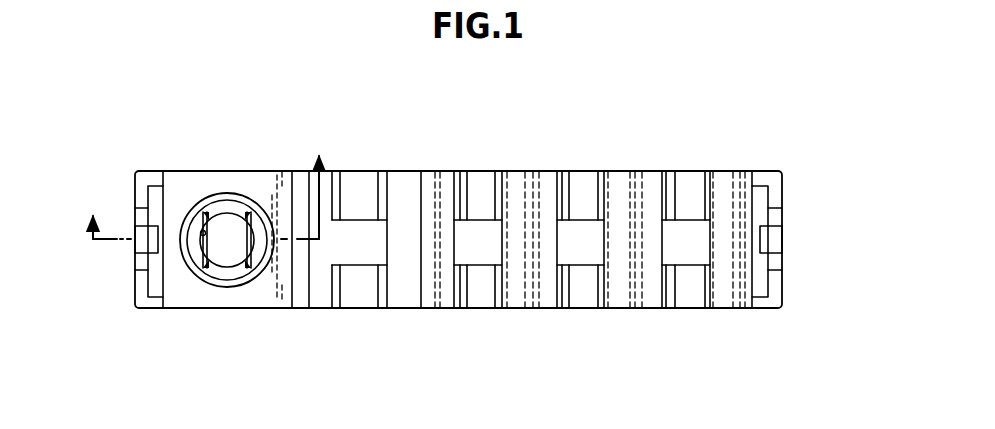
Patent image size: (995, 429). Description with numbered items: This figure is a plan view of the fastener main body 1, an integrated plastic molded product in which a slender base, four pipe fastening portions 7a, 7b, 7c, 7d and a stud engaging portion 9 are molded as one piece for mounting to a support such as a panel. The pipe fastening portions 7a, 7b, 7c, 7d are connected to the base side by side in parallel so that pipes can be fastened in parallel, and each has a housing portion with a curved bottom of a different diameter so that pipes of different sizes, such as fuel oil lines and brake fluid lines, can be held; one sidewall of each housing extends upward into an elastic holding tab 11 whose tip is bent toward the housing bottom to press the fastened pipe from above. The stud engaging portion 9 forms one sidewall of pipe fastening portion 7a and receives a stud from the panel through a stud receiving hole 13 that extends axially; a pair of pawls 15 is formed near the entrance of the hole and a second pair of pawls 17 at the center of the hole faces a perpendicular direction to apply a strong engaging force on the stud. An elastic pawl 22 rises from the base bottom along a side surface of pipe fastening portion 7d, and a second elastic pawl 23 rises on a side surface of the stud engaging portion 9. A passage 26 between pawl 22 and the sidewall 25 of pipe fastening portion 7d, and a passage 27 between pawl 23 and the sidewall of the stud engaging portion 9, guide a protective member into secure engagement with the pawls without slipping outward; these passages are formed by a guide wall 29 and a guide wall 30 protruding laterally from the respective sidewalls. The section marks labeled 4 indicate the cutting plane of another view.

The fastener main body 1 is at (802, 117).
The stud engaging portion 9 is at (210, 185).
The pipe fastening portion 7a is at (361, 162).
The pipe fastening portion 7b is at (484, 162).
The pipe fastening portion 7c is at (589, 162).
The pipe fastening portion 7d is at (692, 162).
The elastic holding tab 11 is at (404, 297).
The stud receiving hole 13 is at (230, 242).
The pawls 15 is at (222, 268).
The pawls 17 is at (203, 236).
The elastic pawl 22 is at (772, 240).
The second elastic pawl 23 is at (136, 246).
The sidewall 25 is at (762, 187).
The passage 26 is at (771, 204).
The passage 27 is at (155, 292).
The guide wall 29 is at (772, 288).
The guide wall 30 is at (137, 287).
The section line IV-IV 4 is at (207, 178).